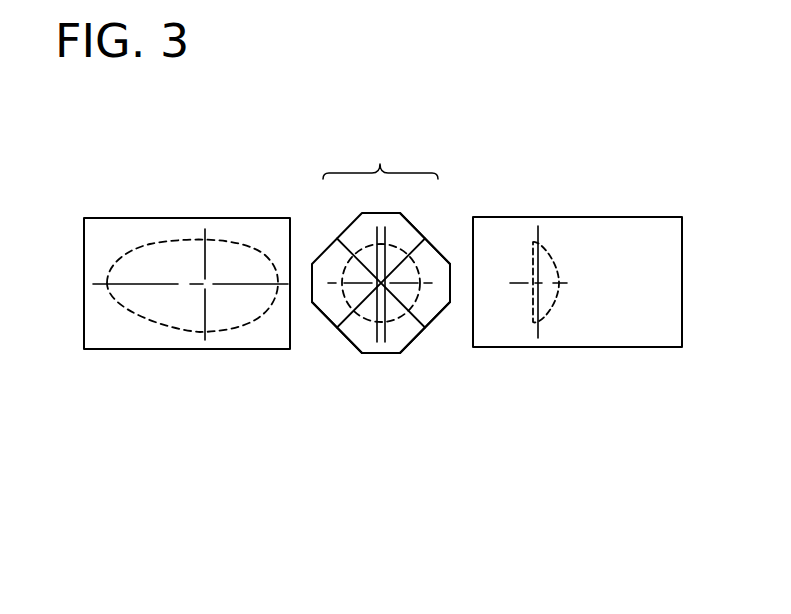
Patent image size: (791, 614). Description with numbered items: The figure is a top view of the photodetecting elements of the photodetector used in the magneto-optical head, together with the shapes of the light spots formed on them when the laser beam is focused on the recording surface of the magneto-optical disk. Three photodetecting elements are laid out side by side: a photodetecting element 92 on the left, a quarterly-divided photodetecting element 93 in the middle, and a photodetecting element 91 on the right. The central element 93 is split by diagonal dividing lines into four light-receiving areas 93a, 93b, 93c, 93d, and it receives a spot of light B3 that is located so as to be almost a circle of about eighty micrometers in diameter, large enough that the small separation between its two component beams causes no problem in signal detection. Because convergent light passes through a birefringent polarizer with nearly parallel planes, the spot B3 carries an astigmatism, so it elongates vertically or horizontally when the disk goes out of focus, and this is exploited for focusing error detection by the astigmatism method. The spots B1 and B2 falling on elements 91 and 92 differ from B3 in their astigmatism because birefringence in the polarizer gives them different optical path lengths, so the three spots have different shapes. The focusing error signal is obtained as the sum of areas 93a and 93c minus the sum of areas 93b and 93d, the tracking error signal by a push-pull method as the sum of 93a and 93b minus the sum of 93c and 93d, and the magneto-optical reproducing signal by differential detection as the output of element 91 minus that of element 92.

The photodetecting element 91 is at (627, 240).
The photodetecting element 92 is at (101, 234).
The quarterly-divided photodetecting element 93 is at (381, 245).
The area of quarterly-divided photodetecting element 93a is at (413, 222).
The area of quarterly-divided photodetecting element 93b is at (435, 314).
The area of quarterly-divided photodetecting element 93c is at (378, 350).
The area of quarterly-divided photodetecting element 93d is at (323, 316).
The spot of light B1 is at (553, 308).
The spot of light B2 is at (152, 318).
The spot of light B3 is at (395, 313).